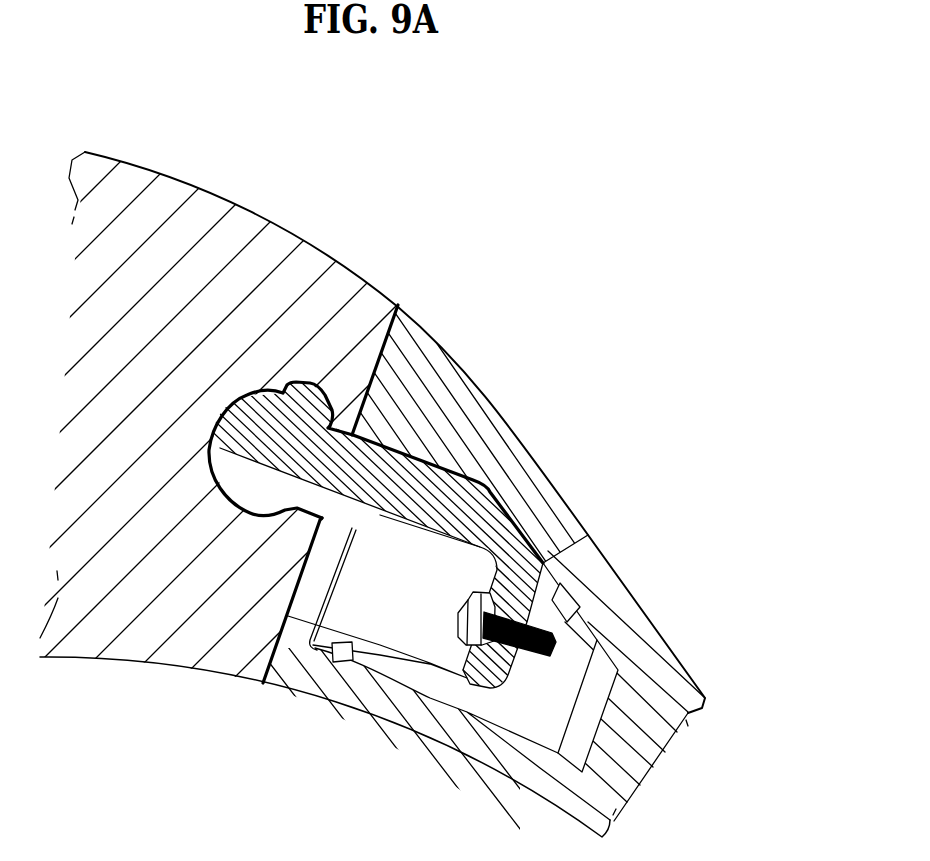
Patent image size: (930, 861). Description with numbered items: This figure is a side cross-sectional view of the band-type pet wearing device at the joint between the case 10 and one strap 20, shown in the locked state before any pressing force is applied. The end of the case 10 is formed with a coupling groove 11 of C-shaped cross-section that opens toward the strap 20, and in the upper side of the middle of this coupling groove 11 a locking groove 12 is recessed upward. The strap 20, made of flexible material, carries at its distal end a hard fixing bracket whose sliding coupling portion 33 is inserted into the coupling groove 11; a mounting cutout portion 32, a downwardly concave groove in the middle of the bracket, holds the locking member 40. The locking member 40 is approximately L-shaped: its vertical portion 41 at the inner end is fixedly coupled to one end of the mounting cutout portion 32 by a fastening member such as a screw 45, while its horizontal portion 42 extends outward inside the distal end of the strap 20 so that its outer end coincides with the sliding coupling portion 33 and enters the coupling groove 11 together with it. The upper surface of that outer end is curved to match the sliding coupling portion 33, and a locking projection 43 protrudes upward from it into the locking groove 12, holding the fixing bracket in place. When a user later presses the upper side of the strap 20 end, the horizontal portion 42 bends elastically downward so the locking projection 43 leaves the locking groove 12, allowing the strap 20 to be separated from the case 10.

The case 10 is at (240, 226).
The coupling groove 11 is at (206, 490).
The locking groove 12 is at (305, 380).
The strap 20 is at (478, 443).
The mounting cutout portion 32 is at (333, 616).
The sliding coupling portion 33 is at (257, 496).
The locking member 40 is at (380, 501).
The vertical portion 41 is at (498, 677).
The horizontal portion 42 is at (401, 768).
The locking projection 43 is at (339, 372).
The screw 45 is at (543, 560).